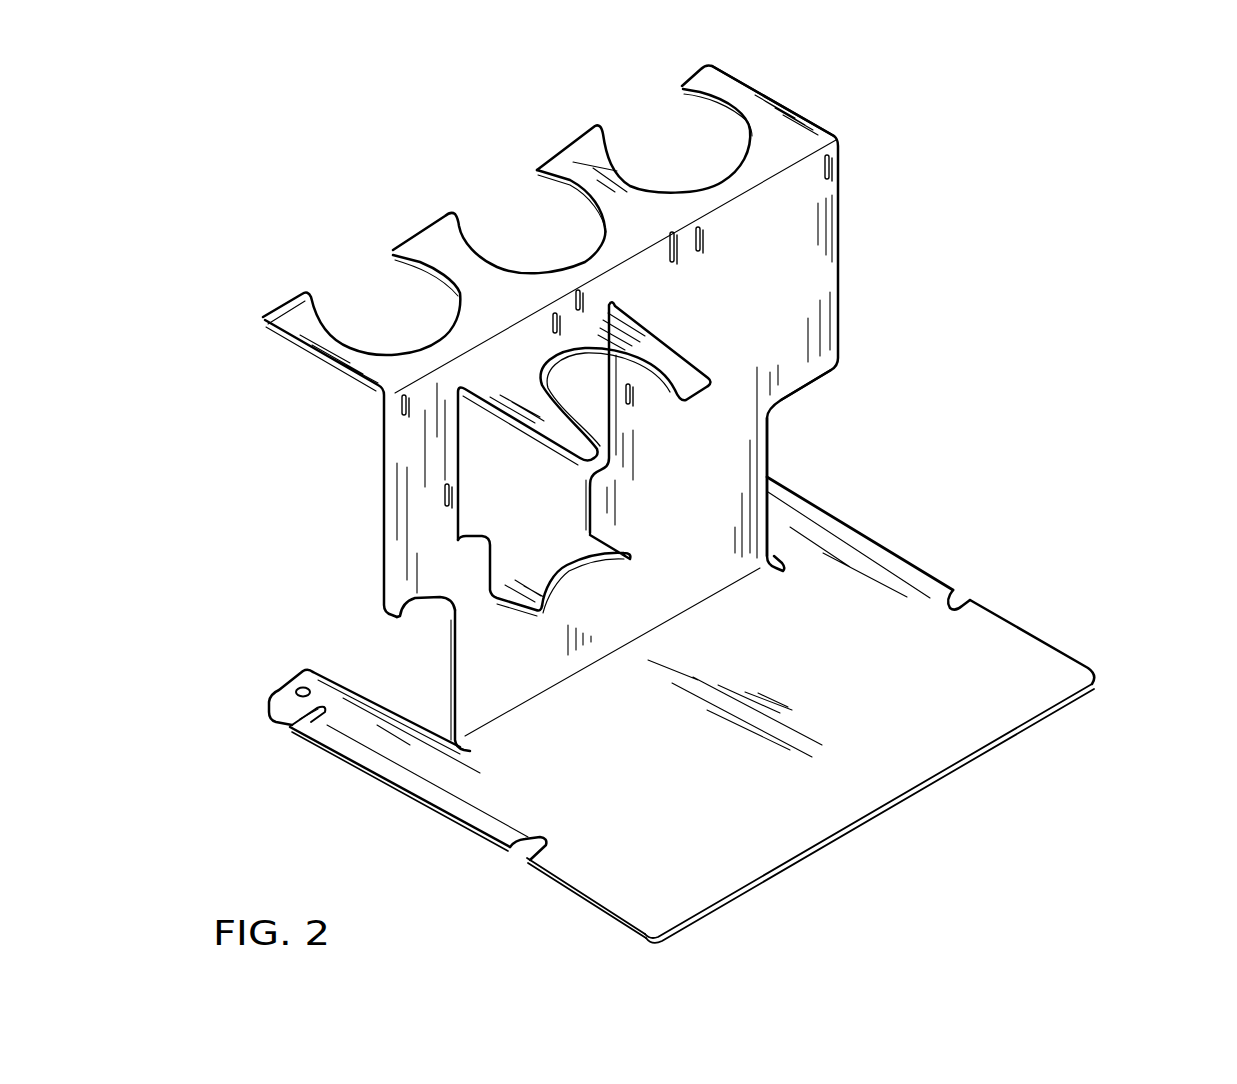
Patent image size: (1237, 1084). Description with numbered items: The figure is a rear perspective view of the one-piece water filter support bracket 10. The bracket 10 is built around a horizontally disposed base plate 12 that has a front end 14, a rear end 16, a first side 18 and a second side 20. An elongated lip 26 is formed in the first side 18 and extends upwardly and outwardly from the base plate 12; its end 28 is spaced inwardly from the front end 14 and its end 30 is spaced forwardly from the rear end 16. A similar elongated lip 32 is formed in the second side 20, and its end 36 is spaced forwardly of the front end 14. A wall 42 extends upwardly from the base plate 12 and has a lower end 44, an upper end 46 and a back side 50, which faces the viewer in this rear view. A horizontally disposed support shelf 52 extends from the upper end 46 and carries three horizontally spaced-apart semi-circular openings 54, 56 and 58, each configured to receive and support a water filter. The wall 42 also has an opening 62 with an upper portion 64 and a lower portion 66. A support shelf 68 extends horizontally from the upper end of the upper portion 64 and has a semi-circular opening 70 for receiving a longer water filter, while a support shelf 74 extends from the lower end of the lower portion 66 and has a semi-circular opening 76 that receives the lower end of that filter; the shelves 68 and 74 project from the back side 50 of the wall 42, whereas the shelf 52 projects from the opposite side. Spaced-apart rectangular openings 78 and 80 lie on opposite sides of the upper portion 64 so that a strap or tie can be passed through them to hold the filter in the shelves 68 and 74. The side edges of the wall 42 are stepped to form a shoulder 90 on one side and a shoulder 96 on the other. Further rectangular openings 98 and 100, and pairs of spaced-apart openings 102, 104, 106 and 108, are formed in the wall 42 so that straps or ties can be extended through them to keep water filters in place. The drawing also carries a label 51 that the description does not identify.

The bracket 10 is at (955, 410).
The base plate 12 is at (844, 758).
The front end 14 is at (290, 681).
The rear end 16 is at (1027, 730).
The first side 18 is at (567, 893).
The second side 20 is at (1078, 662).
The elongated lip 26 is at (427, 792).
The end 28 is at (316, 720).
The end 30 is at (295, 692).
The elongated lip 32 is at (860, 530).
The end 36 is at (962, 590).
The wall 42 is at (850, 222).
The lower end 44 is at (687, 613).
The upper end 46 is at (826, 138).
The back side 50 is at (453, 693).
The wall lower edge 51 is at (767, 462).
The support shelf 52 is at (787, 118).
The semi-circular opening 54 is at (322, 325).
The semi-circular opening 56 is at (540, 168).
The semi-circular opening 58 is at (724, 88).
The opening 62 is at (468, 445).
The upper portion 64 is at (457, 440).
The lower portion 66 is at (492, 561).
The support shelf 68 is at (650, 327).
The semi-circular opening 70 is at (657, 357).
The support shelf 74 is at (578, 535).
The semi-circular opening 76 is at (577, 567).
The rectangular opening 78 is at (444, 495).
The rectangular opening 80 is at (632, 400).
The shoulder 90 is at (417, 607).
The shoulder 96 is at (810, 383).
The rectangular opening 98 is at (401, 407).
The rectangular opening 100 is at (552, 325).
The opening 102 is at (577, 297).
The opening 104 is at (672, 232).
The opening 106 is at (699, 227).
The opening 108 is at (833, 163).